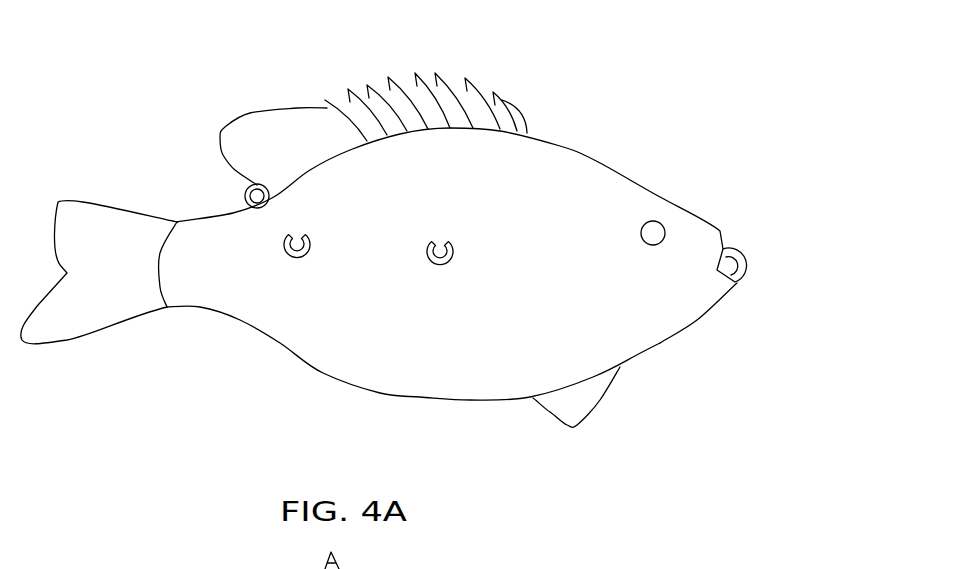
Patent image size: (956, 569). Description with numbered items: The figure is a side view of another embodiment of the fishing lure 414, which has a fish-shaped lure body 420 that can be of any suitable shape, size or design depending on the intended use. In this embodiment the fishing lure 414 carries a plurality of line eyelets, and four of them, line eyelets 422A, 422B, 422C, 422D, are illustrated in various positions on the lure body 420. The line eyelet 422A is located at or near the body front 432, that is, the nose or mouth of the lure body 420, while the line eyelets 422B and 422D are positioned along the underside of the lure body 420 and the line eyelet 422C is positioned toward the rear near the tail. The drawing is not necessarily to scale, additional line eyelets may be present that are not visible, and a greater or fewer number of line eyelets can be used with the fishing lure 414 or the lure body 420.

The fishing lure 414 is at (266, 93).
The lure body 420 is at (619, 163).
The line eyelet 422A is at (745, 263).
The line eyelet 422B is at (437, 263).
The line eyelet 422C is at (245, 196).
The line eyelet 422D is at (297, 257).
The body front 432 is at (697, 320).